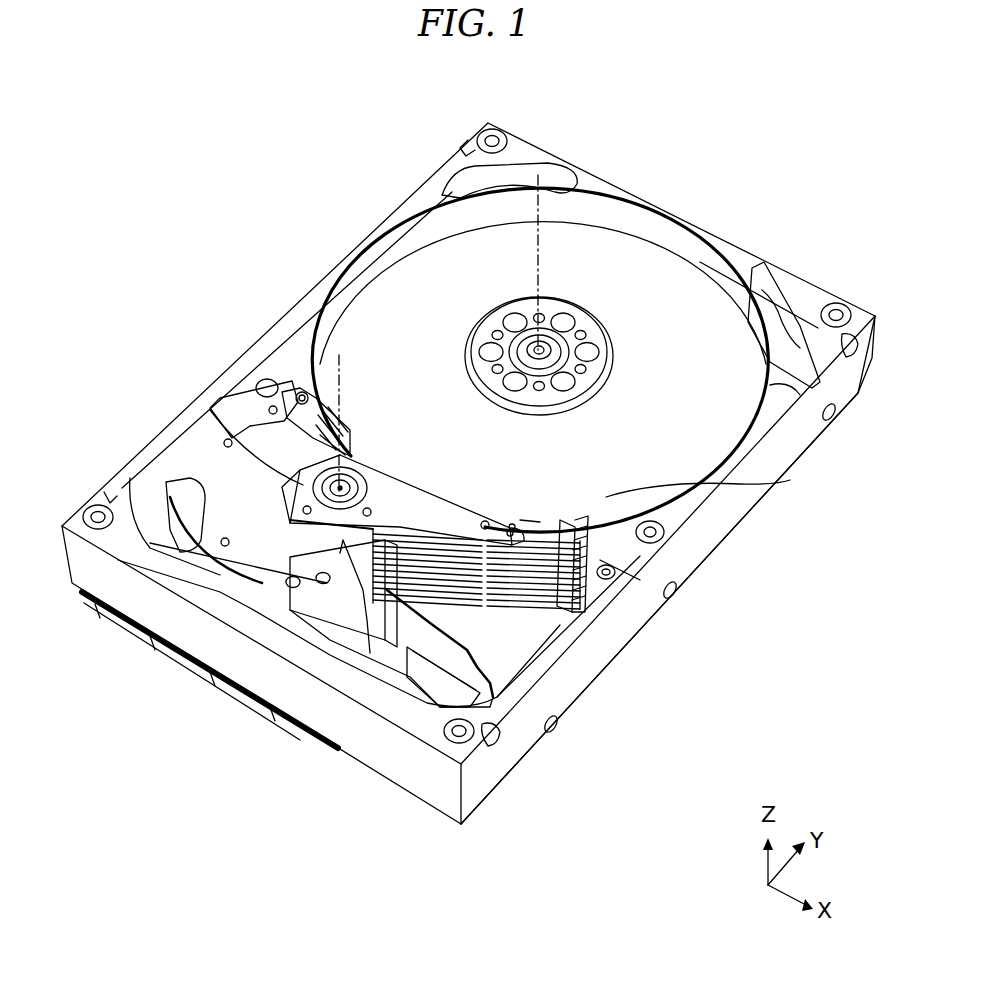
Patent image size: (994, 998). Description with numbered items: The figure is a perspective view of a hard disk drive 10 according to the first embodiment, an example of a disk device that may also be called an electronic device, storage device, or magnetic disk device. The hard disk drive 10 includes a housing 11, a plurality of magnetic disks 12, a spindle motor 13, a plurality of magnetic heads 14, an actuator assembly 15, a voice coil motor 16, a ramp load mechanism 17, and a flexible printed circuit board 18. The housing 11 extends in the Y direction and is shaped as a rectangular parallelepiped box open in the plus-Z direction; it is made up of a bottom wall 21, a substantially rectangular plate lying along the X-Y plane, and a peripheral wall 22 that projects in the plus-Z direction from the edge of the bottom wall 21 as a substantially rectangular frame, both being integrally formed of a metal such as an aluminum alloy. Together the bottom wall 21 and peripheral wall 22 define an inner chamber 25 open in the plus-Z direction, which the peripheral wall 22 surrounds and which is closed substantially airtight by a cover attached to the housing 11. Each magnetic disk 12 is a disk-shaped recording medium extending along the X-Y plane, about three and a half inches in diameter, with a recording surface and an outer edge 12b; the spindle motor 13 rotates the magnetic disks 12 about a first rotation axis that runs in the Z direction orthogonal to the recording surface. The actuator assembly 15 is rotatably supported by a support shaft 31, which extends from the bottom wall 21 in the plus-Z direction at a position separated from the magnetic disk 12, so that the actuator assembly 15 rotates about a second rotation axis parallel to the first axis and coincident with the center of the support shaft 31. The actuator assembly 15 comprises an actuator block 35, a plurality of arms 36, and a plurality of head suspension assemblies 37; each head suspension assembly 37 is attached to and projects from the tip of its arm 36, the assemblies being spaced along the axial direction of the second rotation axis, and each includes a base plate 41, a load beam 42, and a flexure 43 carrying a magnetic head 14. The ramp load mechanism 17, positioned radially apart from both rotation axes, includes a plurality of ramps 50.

The hard disk drive 10 is at (216, 116).
The housing 11 is at (728, 511).
The magnetic disk 12 is at (425, 240).
The outer edge 12b is at (793, 396).
The spindle motor 13 is at (541, 348).
The magnetic head 14 is at (588, 520).
The actuator assembly 15 is at (501, 513).
The voice coil motor 16 is at (247, 430).
The ramp load mechanism 17 is at (655, 582).
The flexible printed circuit board 18 is at (387, 592).
The bottom wall 21 is at (545, 620).
The peripheral wall 22 is at (697, 560).
The inner chamber 25 is at (506, 662).
The support shaft 31 is at (345, 486).
The actuator block 35 is at (303, 497).
The arm 36 is at (424, 456).
The head suspension assembly 37 is at (529, 526).
The base plate 41 is at (512, 524).
The load beam 42 is at (566, 524).
The flexure 43 is at (368, 546).
The ramp 50 is at (778, 486).